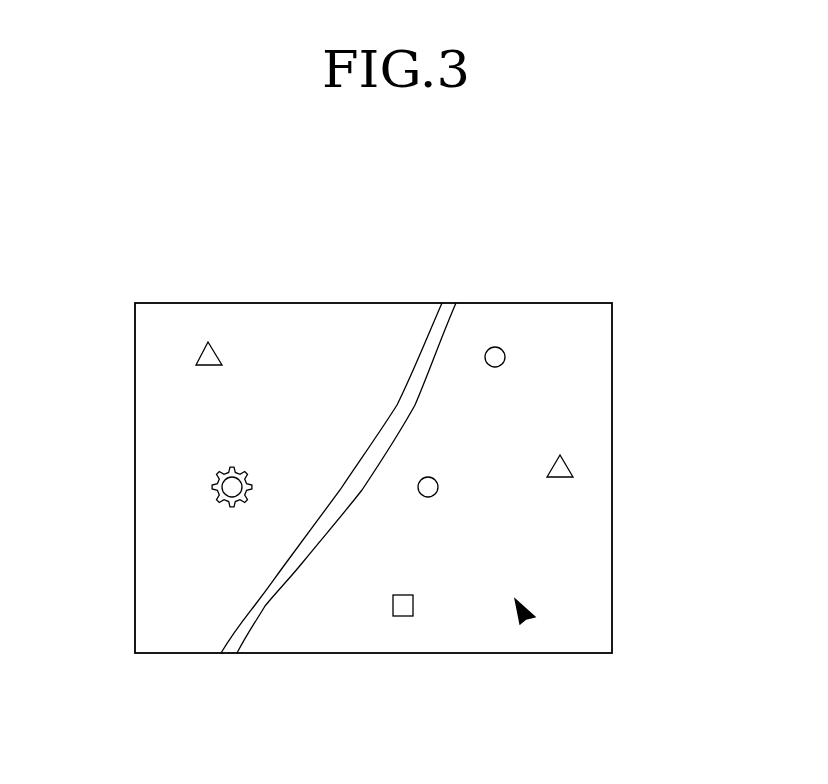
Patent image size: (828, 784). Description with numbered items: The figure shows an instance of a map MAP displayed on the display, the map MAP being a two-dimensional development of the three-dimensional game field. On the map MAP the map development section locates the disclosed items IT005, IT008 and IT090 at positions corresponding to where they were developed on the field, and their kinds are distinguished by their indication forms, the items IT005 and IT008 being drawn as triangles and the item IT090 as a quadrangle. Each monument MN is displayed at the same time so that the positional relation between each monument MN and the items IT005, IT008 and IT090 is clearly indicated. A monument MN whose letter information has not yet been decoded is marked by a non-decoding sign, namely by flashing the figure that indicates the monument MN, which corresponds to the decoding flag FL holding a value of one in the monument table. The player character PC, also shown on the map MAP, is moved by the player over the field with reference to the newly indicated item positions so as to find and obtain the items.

The map MAP is at (367, 322).
The item IT005 is at (211, 347).
The monument MN is at (496, 347).
The decoding flag FL is at (220, 496).
The item IT008 is at (572, 467).
The item IT090 is at (404, 616).
The player character PC is at (528, 623).